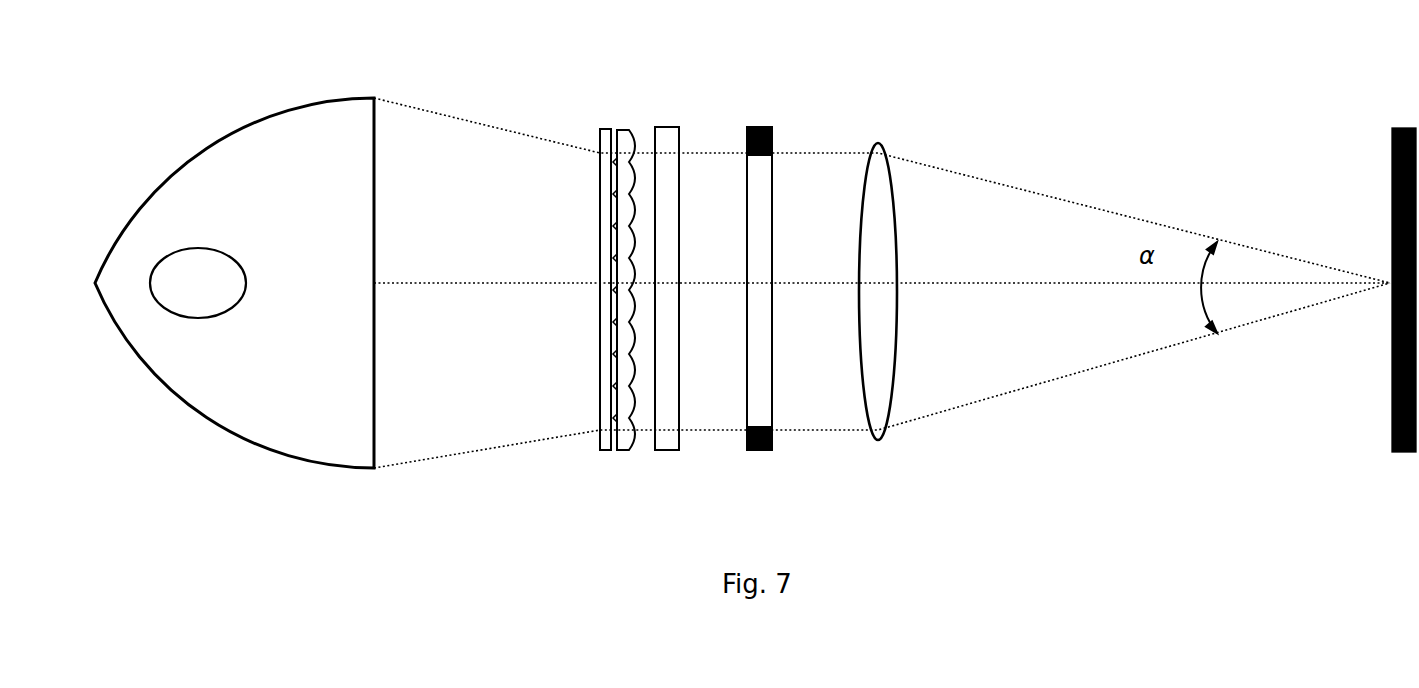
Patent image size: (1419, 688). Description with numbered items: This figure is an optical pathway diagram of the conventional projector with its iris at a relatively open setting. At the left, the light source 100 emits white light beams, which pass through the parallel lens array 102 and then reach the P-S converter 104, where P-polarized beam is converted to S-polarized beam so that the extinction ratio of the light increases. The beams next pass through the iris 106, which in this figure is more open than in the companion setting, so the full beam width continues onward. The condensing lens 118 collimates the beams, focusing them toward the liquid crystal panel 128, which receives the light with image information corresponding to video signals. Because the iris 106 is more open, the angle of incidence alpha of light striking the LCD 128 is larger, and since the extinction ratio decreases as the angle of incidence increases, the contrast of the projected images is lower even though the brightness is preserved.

The light source 100 is at (278, 113).
The parallel lens array 102 is at (608, 128).
The P-S converter 104 is at (677, 127).
The iris 106 is at (765, 127).
The condensing lens 118 is at (878, 143).
The liquid crystal panel (LCD) 128 is at (1392, 151).